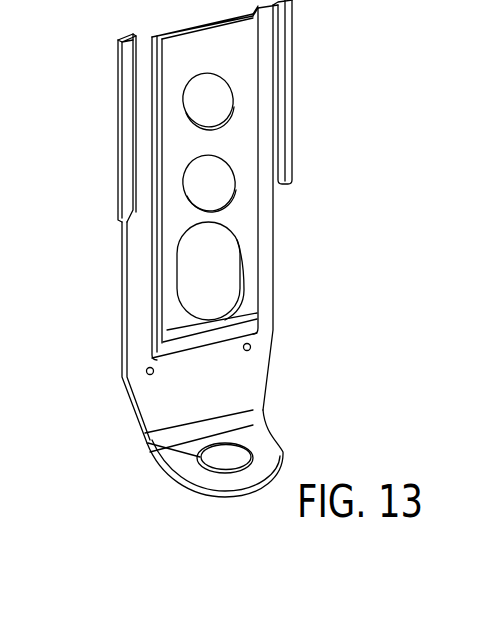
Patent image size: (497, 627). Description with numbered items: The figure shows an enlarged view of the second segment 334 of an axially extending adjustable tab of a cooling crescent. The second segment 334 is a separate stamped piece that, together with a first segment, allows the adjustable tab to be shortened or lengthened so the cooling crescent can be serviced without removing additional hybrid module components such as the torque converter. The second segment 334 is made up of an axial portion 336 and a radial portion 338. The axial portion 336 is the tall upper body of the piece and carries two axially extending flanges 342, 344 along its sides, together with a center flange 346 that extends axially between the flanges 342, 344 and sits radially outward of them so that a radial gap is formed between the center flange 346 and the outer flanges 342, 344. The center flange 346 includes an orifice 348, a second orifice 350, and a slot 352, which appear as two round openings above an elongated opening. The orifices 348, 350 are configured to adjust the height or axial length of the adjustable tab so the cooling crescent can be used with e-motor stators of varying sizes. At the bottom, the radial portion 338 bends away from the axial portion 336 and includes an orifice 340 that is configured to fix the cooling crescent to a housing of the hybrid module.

The second segment 334 is at (101, 96).
The axial portion 336 is at (275, 352).
The radial portion 338 is at (283, 451).
The orifice 340 is at (148, 443).
The axially extending flange 342 is at (133, 252).
The axially extending flange 344 is at (287, 35).
The center flange 346 is at (258, 270).
The orifice 348 is at (223, 97).
The orifice 350 is at (223, 173).
The slot 352 is at (197, 310).